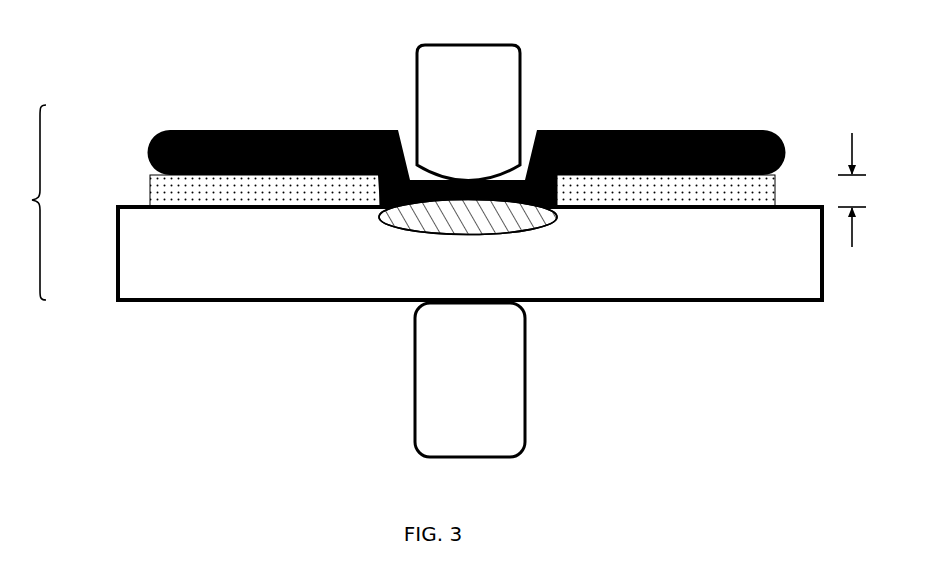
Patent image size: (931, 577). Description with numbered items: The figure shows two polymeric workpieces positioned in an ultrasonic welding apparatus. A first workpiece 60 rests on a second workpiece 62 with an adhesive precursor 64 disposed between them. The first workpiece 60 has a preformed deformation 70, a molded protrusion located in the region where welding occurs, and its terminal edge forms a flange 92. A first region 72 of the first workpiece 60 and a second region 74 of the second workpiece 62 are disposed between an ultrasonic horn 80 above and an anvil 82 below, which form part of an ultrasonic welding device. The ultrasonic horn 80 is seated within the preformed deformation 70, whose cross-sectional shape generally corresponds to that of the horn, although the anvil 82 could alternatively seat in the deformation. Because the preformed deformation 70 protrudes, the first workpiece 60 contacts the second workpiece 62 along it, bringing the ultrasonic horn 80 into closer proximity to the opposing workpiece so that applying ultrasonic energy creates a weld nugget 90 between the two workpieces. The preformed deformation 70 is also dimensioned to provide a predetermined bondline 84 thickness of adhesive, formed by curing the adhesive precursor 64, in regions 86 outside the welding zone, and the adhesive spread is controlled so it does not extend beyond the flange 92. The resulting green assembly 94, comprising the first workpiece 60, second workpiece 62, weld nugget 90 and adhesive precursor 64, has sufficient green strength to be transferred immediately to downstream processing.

The first workpiece 60 is at (467, 226).
The second workpiece 62 is at (458, 279).
The adhesive precursor 64 is at (423, 258).
The preformed deformation 70 is at (560, 207).
The first region 72 is at (449, 203).
The second region 74 is at (439, 284).
The ultrasonic horn 80 is at (456, 117).
The anvil 82 is at (458, 396).
The bondline 84 is at (852, 190).
The regions outside the welding zone 86 is at (341, 189).
The weld nugget 90 is at (457, 287).
The flange 92 is at (428, 226).
The green assembly 94 is at (26, 202).